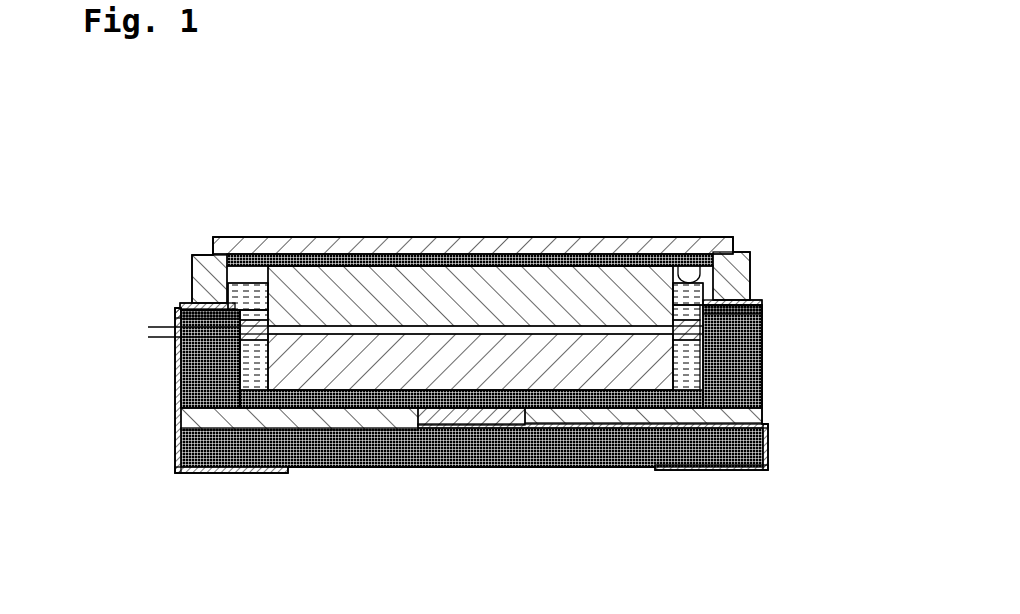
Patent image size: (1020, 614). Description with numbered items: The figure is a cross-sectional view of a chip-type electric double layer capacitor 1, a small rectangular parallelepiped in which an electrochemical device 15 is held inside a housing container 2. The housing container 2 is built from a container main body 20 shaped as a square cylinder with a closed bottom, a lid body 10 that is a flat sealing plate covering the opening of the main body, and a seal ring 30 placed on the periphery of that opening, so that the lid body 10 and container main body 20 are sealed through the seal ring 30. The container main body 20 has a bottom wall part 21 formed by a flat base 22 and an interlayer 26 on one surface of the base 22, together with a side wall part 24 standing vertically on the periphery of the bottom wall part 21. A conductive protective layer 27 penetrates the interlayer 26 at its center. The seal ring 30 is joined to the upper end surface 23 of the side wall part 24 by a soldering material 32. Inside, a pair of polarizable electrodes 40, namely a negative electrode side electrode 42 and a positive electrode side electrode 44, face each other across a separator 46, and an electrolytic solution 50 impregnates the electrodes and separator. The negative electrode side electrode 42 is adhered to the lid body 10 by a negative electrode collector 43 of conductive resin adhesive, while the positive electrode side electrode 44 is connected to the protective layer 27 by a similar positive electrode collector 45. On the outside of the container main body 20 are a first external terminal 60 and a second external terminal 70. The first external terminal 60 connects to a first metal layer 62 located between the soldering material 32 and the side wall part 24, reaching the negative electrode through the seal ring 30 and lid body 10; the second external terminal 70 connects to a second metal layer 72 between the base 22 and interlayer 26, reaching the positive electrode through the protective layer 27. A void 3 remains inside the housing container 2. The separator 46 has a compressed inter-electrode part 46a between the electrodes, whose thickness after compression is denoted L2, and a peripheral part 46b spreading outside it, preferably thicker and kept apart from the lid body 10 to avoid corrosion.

The electric double layer capacitor 1 is at (755, 184).
The housing container 2 is at (765, 250).
The void 3 is at (692, 265).
The lid body 10 is at (605, 248).
The electrochemical device 15 is at (563, 256).
The container main body 20 is at (766, 362).
The bottom wall part 21 is at (432, 470).
The base 22 is at (478, 468).
The upper end surface 23 is at (175, 318).
The side wall part 24 is at (186, 375).
The interlayer 26 is at (765, 418).
The protective layer 27 is at (530, 468).
The seal ring 30 is at (195, 265).
The soldering material 32 is at (184, 303).
The polarizable electrodes 40 is at (375, 182).
The negative electrode side electrode 42 is at (385, 290).
The negative electrode collector 43 is at (507, 250).
The positive electrode side electrode 44 is at (425, 365).
The positive electrode collector 45 is at (358, 400).
The separator 46 is at (228, 178).
The inter-electrode part 46a is at (325, 325).
The peripheral part 46b is at (242, 318).
The electrolytic solution 50 is at (188, 395).
The first external terminal 60 is at (235, 472).
The first metal layer 62 is at (178, 312).
The second external terminal 70 is at (705, 470).
The second metal layer 72 is at (770, 440).
The thickness after compression L2 is at (155, 312).